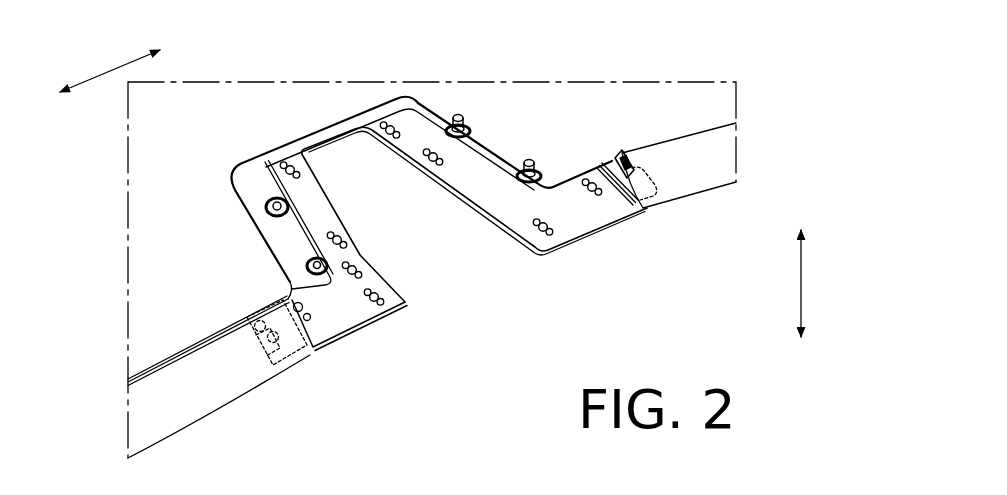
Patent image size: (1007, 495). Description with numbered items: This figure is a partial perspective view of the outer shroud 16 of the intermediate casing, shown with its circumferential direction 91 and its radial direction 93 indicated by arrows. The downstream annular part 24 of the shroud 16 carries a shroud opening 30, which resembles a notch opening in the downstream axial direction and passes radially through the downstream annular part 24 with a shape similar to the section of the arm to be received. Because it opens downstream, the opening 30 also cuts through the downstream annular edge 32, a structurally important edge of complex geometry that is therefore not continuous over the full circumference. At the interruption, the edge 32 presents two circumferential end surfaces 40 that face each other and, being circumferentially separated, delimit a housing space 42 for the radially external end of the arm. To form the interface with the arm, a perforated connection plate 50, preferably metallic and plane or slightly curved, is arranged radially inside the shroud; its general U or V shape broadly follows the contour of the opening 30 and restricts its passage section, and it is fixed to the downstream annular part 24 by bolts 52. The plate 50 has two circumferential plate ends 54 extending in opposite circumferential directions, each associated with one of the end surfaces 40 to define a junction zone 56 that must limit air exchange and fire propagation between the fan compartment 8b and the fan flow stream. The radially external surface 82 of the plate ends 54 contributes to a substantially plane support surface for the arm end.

The outer shroud 16 is at (542, 62).
The downstream annular part 24 is at (583, 103).
The shroud opening 30 is at (428, 135).
The downstream annular edge 32 is at (712, 142).
The circumferential end surface 40 is at (290, 320).
The housing space 42 is at (478, 277).
The perforated connection plate 50 is at (477, 183).
The bolt 52 is at (528, 165).
The circumferential plate end 54 is at (350, 313).
The junction zone 56 is at (322, 375).
The radially external surface 82 is at (372, 278).
The fan compartment 8b is at (193, 274).
The circumferential direction 91 is at (107, 70).
The radial direction 93 is at (798, 283).